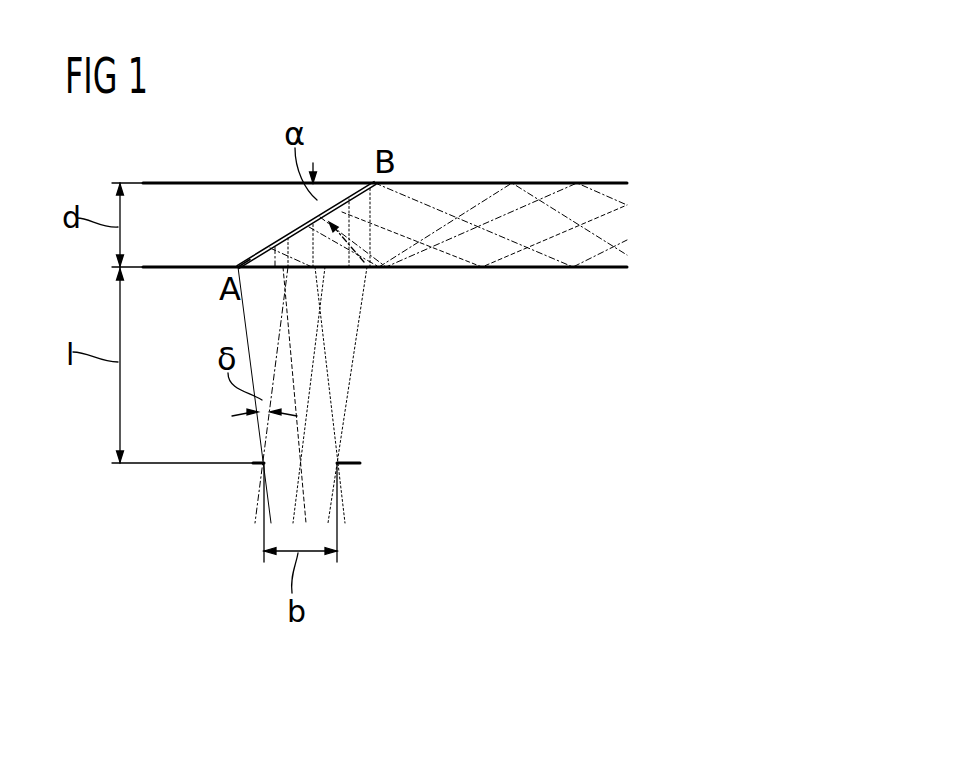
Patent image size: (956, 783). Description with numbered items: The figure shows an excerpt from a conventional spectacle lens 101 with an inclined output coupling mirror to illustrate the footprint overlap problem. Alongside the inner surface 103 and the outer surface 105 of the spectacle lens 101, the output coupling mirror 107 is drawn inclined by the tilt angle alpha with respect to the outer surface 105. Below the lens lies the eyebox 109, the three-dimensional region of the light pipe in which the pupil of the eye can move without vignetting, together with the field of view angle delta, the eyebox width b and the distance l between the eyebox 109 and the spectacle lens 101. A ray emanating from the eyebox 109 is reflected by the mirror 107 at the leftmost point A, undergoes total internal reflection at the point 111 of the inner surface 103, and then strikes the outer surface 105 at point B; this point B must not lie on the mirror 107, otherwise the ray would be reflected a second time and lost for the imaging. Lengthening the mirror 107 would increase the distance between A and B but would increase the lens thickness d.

The spectacle lens 101 is at (346, 147).
The inner surface 103 is at (534, 270).
The outer surface 105 is at (475, 186).
The output coupling mirror 107 is at (263, 248).
The eyebox 109 is at (358, 463).
The point of total internal reflection on the inner surface 111 is at (243, 262).